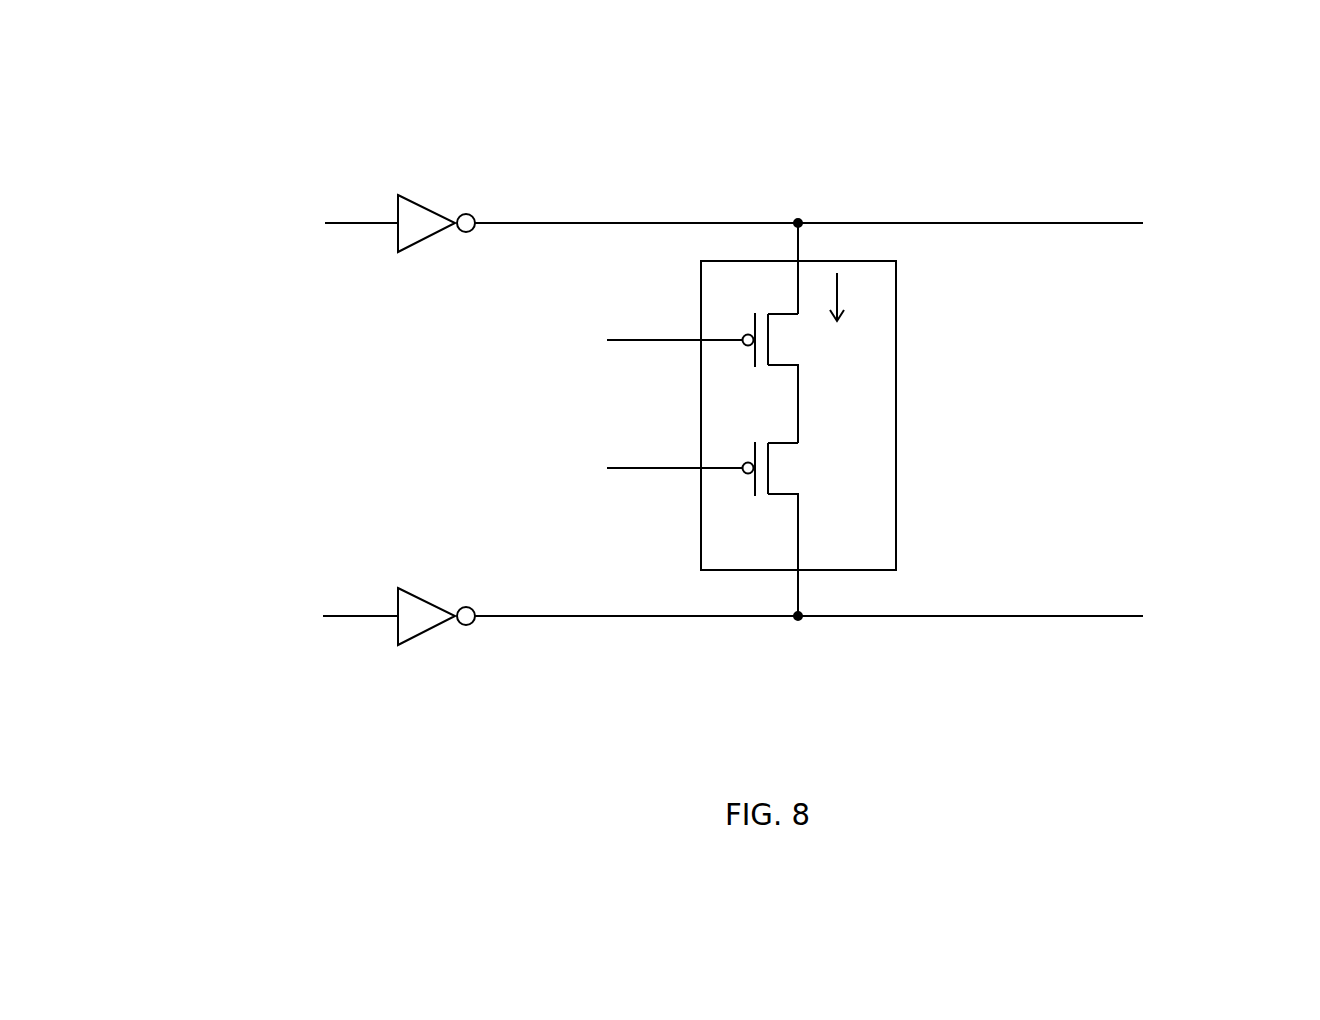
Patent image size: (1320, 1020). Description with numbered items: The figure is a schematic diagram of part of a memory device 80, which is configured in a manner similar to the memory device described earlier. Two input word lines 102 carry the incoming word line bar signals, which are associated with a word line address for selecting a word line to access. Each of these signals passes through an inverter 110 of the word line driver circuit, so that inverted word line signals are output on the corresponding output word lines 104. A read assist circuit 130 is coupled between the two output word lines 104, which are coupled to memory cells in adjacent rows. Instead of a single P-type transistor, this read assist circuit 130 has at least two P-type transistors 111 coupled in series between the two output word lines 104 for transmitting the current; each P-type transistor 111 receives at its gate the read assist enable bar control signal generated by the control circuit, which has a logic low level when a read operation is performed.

The memory device 80 is at (185, 101).
The word line 102 is at (338, 218).
The word line 104 is at (615, 221).
The inverter 110 is at (430, 208).
The P-type transistor 111 is at (793, 363).
The read assist circuit 130 is at (803, 419).